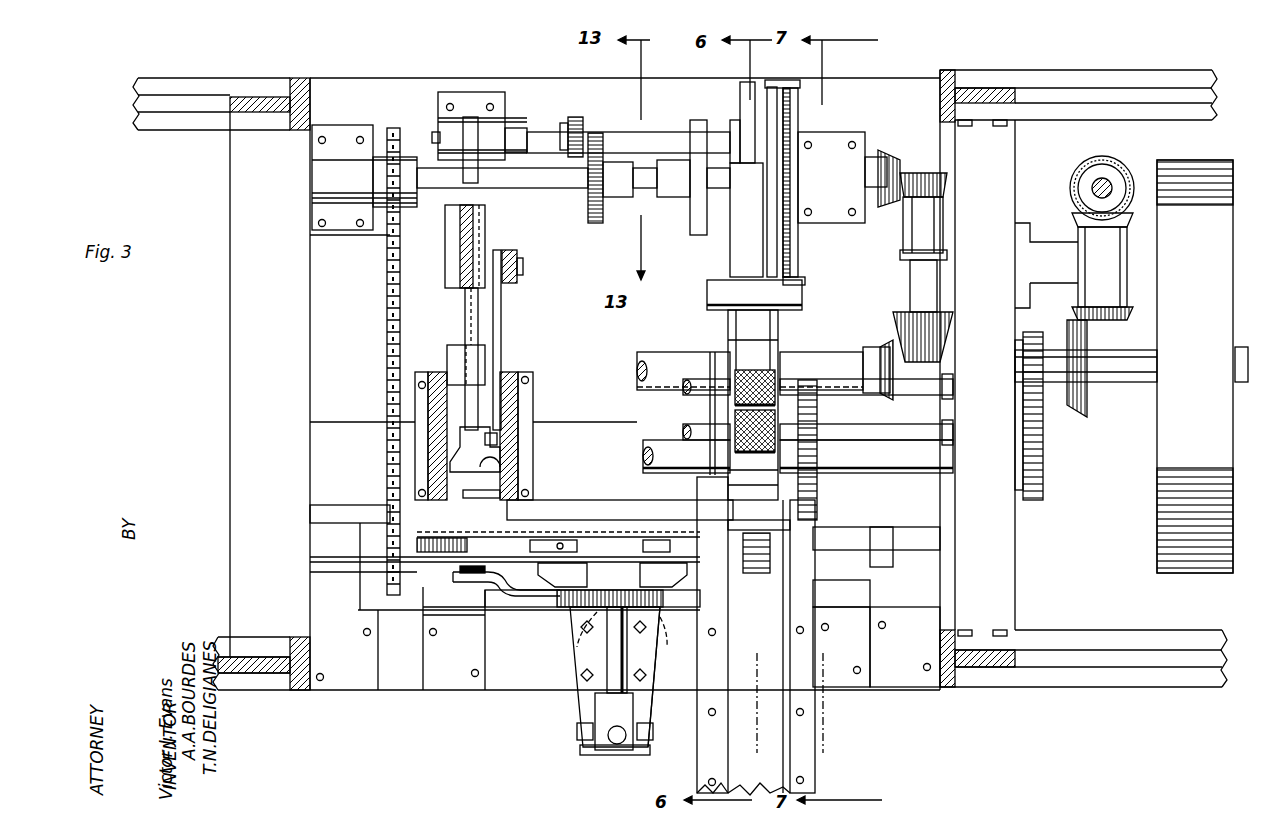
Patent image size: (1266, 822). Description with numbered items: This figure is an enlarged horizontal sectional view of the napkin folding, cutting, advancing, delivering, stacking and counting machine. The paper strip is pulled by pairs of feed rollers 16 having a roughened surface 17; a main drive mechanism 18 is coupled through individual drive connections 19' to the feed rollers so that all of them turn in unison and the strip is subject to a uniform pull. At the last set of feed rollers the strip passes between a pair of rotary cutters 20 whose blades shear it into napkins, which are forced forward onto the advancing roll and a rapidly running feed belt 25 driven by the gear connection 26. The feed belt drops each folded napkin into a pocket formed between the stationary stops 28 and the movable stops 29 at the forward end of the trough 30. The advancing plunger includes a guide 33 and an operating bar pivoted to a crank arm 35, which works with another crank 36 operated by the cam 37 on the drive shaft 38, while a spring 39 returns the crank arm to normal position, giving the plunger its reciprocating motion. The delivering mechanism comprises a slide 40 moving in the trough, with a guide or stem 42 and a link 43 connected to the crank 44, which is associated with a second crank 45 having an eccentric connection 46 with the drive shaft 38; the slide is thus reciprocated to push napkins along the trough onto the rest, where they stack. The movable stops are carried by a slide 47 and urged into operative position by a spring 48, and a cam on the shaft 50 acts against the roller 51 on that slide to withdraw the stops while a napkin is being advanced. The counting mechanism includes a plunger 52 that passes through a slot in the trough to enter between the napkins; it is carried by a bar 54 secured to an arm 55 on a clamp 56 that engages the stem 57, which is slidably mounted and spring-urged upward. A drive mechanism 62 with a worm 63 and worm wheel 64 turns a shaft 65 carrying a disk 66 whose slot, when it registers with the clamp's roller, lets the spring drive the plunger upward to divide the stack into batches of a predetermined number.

The feed rollers 16 is at (733, 433).
The roughened surface 17 is at (777, 372).
The main drive mechanism 18 is at (1147, 368).
The individual drive connections 19' is at (1074, 403).
The rotary cutters 20 is at (743, 357).
The feed belt 25 is at (790, 515).
The gear connection 26 is at (817, 495).
The stationary stops 28 is at (530, 493).
The movable stops 29 is at (730, 550).
The trough 30 is at (767, 727).
The guide 33 is at (743, 108).
The crank arm 35 is at (800, 85).
The crank 36 is at (577, 120).
The cam 37 is at (593, 190).
The drive shaft 38 is at (535, 188).
The spring 39 is at (800, 123).
The slide 40 is at (513, 460).
The guide or stem 42 is at (473, 317).
The link 43 is at (498, 350).
The crank 44 is at (522, 268).
The second crank 45 is at (700, 292).
The eccentric connection 46 is at (697, 157).
The slide 47 is at (560, 538).
The spring 48 is at (388, 503).
The shaft 50 is at (830, 540).
The roller 51 is at (593, 537).
The plunger 52 is at (443, 572).
The bar 54 is at (533, 600).
The arm 55 is at (617, 663).
The clamp 56 is at (613, 707).
The stem 57 is at (640, 716).
The drive mechanism 62 is at (655, 615).
The worm 63 is at (590, 650).
The worm wheel 64 is at (553, 606).
The shaft 65 is at (493, 602).
The disk 66 is at (647, 740).